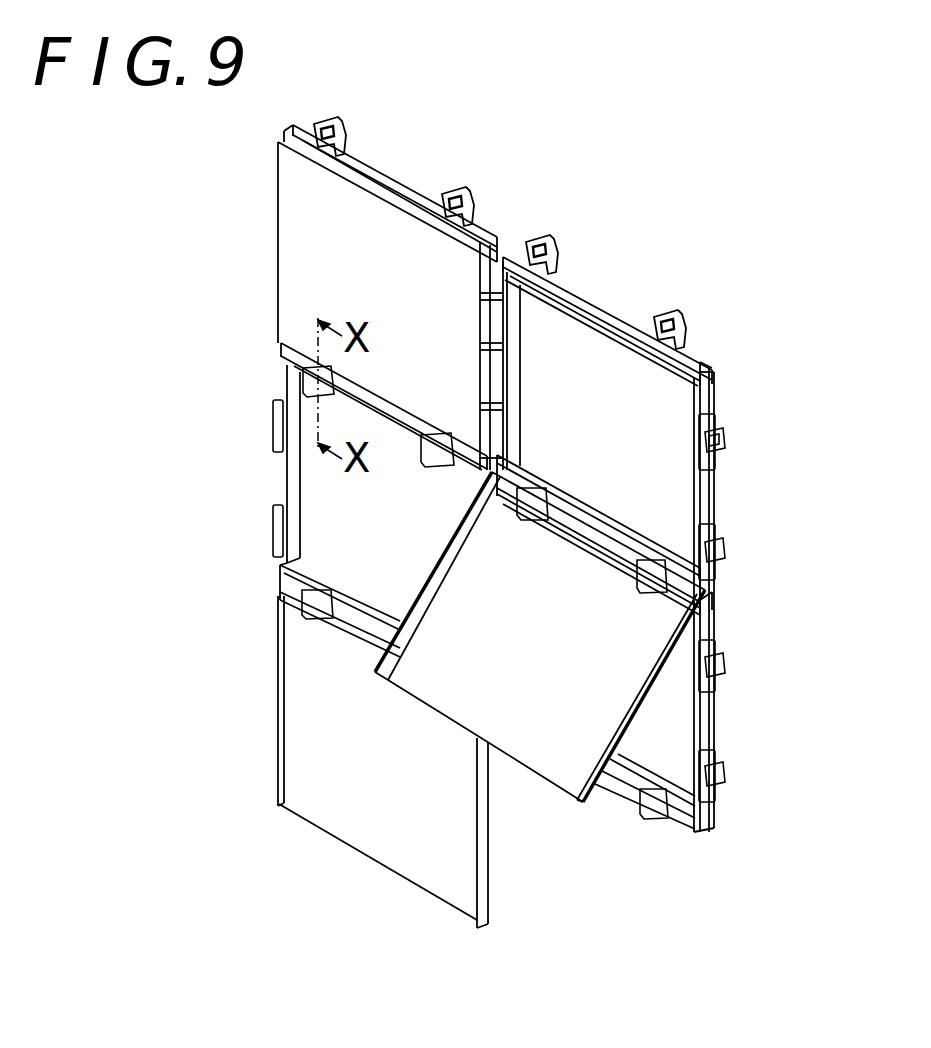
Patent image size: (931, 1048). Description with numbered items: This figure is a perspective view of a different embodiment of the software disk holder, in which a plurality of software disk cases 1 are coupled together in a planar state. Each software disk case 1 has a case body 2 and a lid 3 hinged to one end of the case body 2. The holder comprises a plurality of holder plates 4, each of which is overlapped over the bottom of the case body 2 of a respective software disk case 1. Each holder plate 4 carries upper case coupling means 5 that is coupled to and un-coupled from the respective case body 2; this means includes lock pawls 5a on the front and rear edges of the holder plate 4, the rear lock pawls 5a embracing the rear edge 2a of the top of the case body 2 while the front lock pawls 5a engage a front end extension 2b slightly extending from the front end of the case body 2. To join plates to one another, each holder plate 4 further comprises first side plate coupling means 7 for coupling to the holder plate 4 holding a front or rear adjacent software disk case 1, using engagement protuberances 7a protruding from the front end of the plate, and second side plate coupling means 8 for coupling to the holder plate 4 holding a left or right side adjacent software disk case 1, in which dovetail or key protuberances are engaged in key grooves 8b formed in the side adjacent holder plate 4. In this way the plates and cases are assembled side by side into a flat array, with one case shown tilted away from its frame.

The software disk case 1 is at (290, 243).
The case body 2 is at (312, 497).
The rear edge of the top of the case body 2a is at (720, 593).
The front end extension 2b is at (708, 370).
The lid 3 is at (286, 727).
The holder plate 4 is at (716, 498).
The upper case coupling means 5 is at (302, 388).
The lock pawl 5a is at (284, 356).
The first side plate coupling means 7 is at (338, 126).
The engagement protuberance 7a is at (562, 246).
The second side plate coupling means 8 is at (724, 432).
The key groove 8b is at (727, 441).